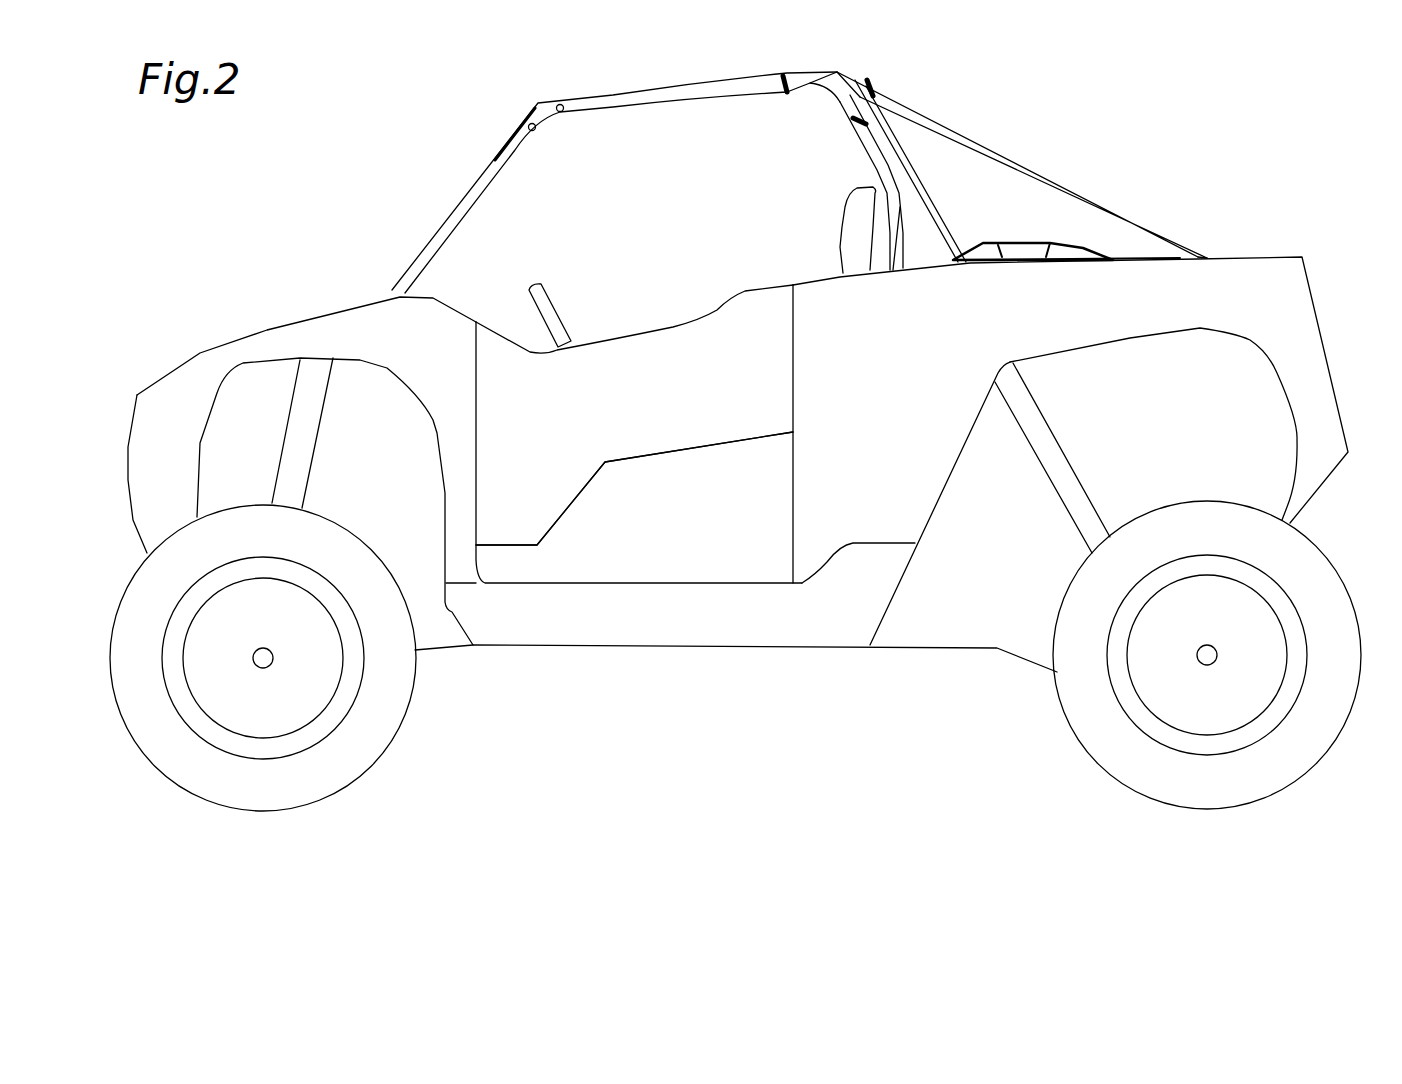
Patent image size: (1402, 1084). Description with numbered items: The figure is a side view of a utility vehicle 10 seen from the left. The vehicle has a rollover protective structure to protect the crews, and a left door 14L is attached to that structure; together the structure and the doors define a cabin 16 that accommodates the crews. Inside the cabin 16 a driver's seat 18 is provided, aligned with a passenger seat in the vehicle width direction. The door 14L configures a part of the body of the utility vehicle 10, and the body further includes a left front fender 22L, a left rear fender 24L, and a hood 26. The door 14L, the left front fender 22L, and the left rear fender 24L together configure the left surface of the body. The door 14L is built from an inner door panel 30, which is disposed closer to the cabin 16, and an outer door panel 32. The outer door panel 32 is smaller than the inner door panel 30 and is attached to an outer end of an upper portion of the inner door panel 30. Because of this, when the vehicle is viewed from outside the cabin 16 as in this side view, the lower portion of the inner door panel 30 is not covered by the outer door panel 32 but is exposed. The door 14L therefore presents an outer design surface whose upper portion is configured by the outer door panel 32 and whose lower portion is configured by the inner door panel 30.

The utility vehicle 10 is at (390, 152).
The left door 14L is at (580, 572).
The cabin 16 is at (665, 198).
The driver's seat 18 is at (853, 188).
The left front fender 22L is at (425, 318).
The left rear fender 24L is at (1200, 277).
The hood 26 is at (267, 330).
The inner door panel 30 is at (727, 525).
The outer door panel 32 is at (609, 431).